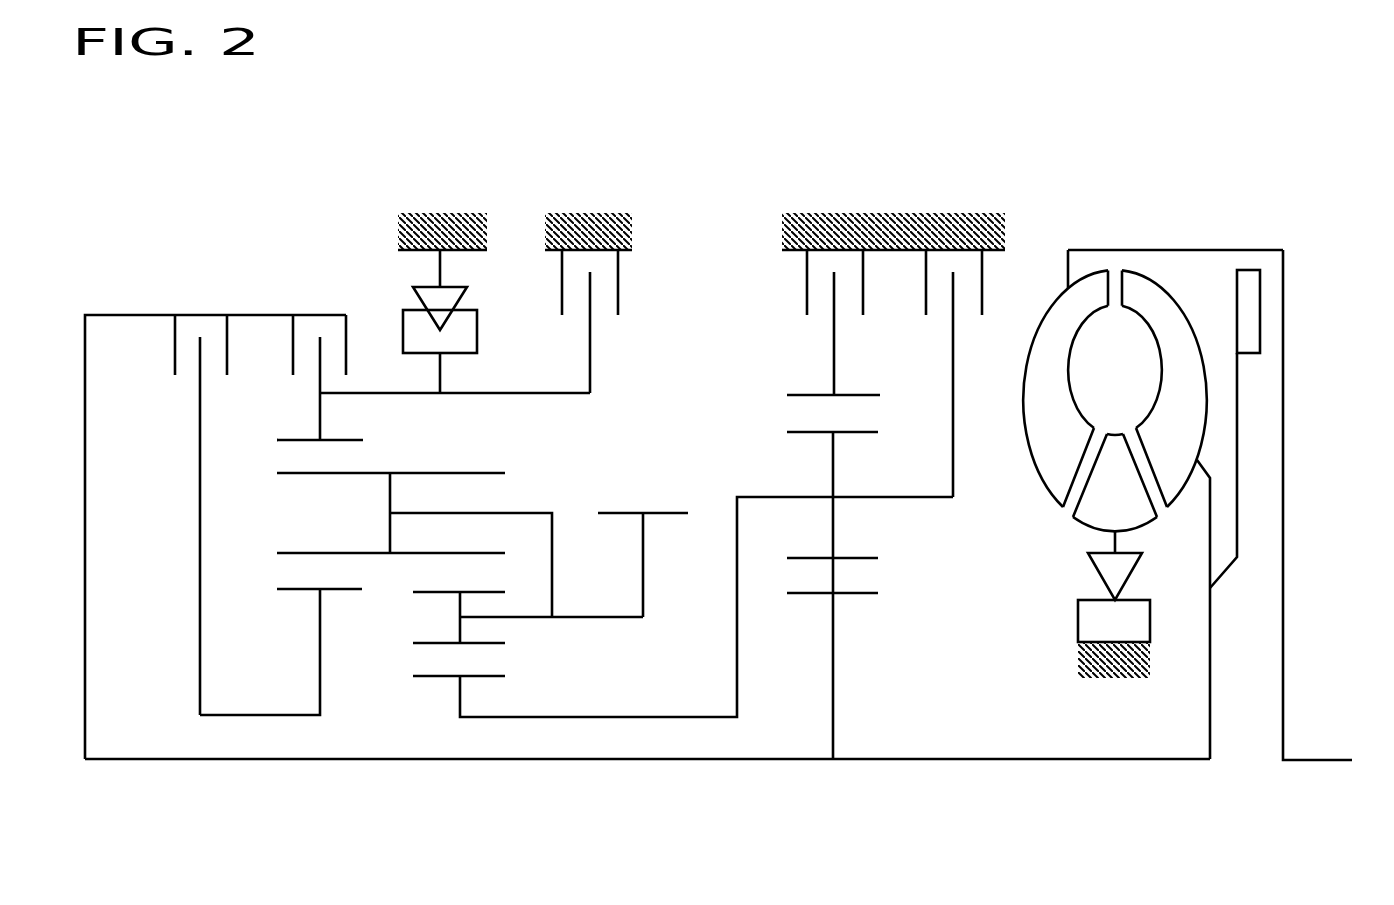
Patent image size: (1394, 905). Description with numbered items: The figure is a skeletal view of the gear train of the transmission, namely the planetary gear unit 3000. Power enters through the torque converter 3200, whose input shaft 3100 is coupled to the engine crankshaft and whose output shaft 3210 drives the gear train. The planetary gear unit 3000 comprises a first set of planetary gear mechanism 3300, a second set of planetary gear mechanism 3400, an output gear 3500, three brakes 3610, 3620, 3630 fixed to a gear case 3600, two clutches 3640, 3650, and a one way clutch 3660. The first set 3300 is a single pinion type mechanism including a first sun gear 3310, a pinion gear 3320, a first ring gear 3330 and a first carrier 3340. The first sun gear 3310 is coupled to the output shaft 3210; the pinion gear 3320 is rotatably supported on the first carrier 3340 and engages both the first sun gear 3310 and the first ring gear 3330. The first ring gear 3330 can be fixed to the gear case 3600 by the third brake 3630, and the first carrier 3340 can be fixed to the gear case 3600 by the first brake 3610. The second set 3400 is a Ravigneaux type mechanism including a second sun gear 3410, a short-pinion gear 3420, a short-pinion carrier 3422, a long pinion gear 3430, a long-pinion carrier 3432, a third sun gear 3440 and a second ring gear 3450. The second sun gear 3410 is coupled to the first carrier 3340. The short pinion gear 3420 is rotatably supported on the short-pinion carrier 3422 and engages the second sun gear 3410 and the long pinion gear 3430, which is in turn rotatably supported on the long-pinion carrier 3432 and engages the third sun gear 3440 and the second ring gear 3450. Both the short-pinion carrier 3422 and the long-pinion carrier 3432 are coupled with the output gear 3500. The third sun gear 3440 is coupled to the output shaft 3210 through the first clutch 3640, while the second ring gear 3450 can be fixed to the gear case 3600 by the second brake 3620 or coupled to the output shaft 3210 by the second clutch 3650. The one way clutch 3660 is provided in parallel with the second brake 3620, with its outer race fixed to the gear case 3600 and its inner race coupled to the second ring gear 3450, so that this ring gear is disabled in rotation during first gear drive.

The planetary gear unit 3000 is at (723, 113).
The input shaft 3100 is at (1313, 760).
The torque converter 3200 is at (1148, 222).
The output shaft 3210 is at (978, 757).
The first set of planetary gear mechanism 3300 is at (829, 789).
The sun gear S(UD) 3310 is at (853, 641).
The pinion gear 3320 is at (866, 550).
The ring gear R(UD) 3330 is at (847, 385).
The carrier C(UD) 3340 is at (953, 457).
The second set of planetary gear mechanism 3400 is at (456, 789).
The sun gear S(D) 3410 is at (518, 676).
The short-pinion gear 3420 is at (409, 598).
The carrier C(1) 3422 is at (530, 618).
The long pinion gear 3430 is at (504, 465).
The carrier C(2) 3432 is at (485, 512).
The sun gear S(S) 3440 is at (297, 597).
The ring gear R(1)(R(2)) 3450 is at (352, 421).
The output gear 3500 is at (670, 505).
The gear case 3600 is at (442, 207).
The B1 brake 3610 is at (973, 322).
The B2 brake 3620 is at (613, 320).
The B3 brake 3630 is at (800, 322).
The C1 clutch 3640 is at (166, 360).
The C2 clutch 3650 is at (286, 360).
The one way clutch F 3660 is at (406, 292).